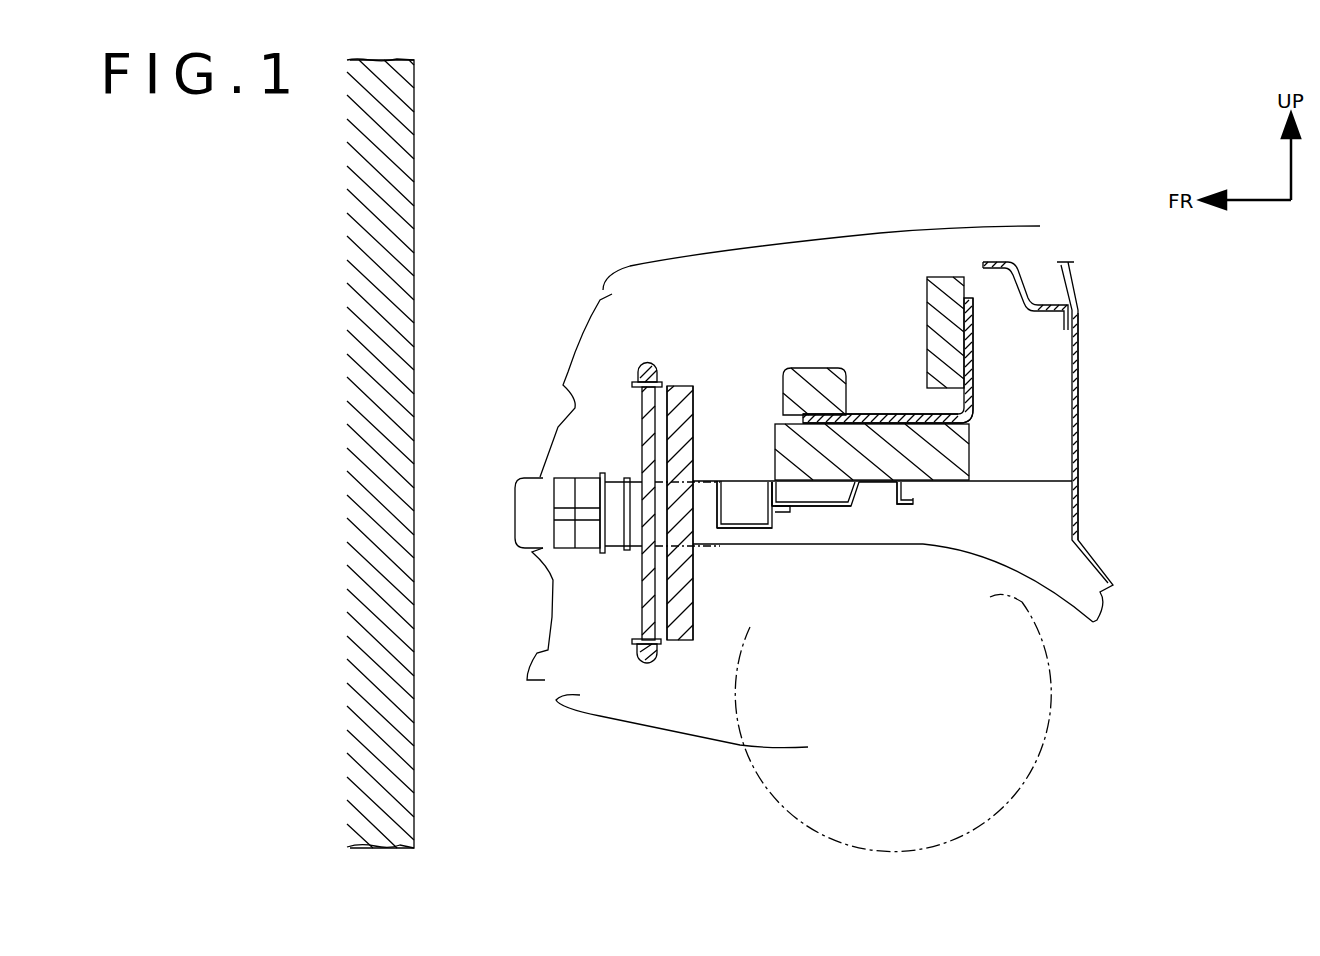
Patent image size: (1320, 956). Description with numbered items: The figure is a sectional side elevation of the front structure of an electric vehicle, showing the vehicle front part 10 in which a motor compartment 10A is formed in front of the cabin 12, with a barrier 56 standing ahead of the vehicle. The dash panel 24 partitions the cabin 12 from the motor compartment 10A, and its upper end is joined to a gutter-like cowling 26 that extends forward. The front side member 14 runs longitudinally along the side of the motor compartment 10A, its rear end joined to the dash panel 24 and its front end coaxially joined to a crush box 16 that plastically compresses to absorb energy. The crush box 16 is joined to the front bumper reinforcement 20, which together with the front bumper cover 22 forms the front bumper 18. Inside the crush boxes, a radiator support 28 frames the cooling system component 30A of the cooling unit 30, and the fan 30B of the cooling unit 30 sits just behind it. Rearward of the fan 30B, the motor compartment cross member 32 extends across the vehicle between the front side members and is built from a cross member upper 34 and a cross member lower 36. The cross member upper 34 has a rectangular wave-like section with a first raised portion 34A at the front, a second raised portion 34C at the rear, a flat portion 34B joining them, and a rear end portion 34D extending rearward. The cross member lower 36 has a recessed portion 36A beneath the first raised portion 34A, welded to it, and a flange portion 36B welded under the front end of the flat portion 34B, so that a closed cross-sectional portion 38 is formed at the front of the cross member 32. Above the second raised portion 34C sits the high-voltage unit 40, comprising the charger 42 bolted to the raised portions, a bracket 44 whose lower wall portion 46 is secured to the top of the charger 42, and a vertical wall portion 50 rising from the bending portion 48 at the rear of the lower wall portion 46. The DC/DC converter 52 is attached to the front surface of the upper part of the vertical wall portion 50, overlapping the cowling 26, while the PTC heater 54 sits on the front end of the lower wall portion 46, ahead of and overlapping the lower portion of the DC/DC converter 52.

The vehicle front part 10 is at (884, 181).
The motor compartment 10A is at (884, 267).
The cabin 12 is at (1182, 418).
The front side member 14 is at (938, 545).
The crush box 16 is at (605, 547).
The front bumper 18 is at (522, 447).
The front bumper reinforcement 20 is at (560, 572).
The front bumper cover 22 is at (515, 505).
The dash panel 24 is at (1080, 370).
The cowling 26 is at (1017, 300).
The radiator support 28 is at (649, 360).
The cooling unit 30 is at (711, 362).
The cooling system component 30A is at (640, 435).
The fan 30B is at (694, 406).
The motor compartment cross member 32 is at (875, 519).
The motor compartment cross member upper 34 is at (765, 472).
The first raised portion 34A is at (743, 478).
The flat portion 34B is at (830, 508).
The second raised portion 34C is at (900, 482).
The rear end portion 34D is at (915, 501).
The motor compartment cross member lower 36 is at (745, 536).
The recessed portion 36A is at (755, 530).
The flange portion 36B is at (790, 512).
The closed cross-sectional portion 38 is at (715, 560).
The high-voltage unit 40 is at (805, 288).
The charger 42 is at (972, 457).
The bracket 44 is at (975, 330).
The lower wall portion 46 is at (870, 413).
The bending portion 48 is at (975, 424).
The vertical wall portion 50 is at (983, 364).
The DC/DC converter 52 is at (927, 293).
The PTC heater 54 is at (800, 368).
The barrier 56 is at (416, 170).